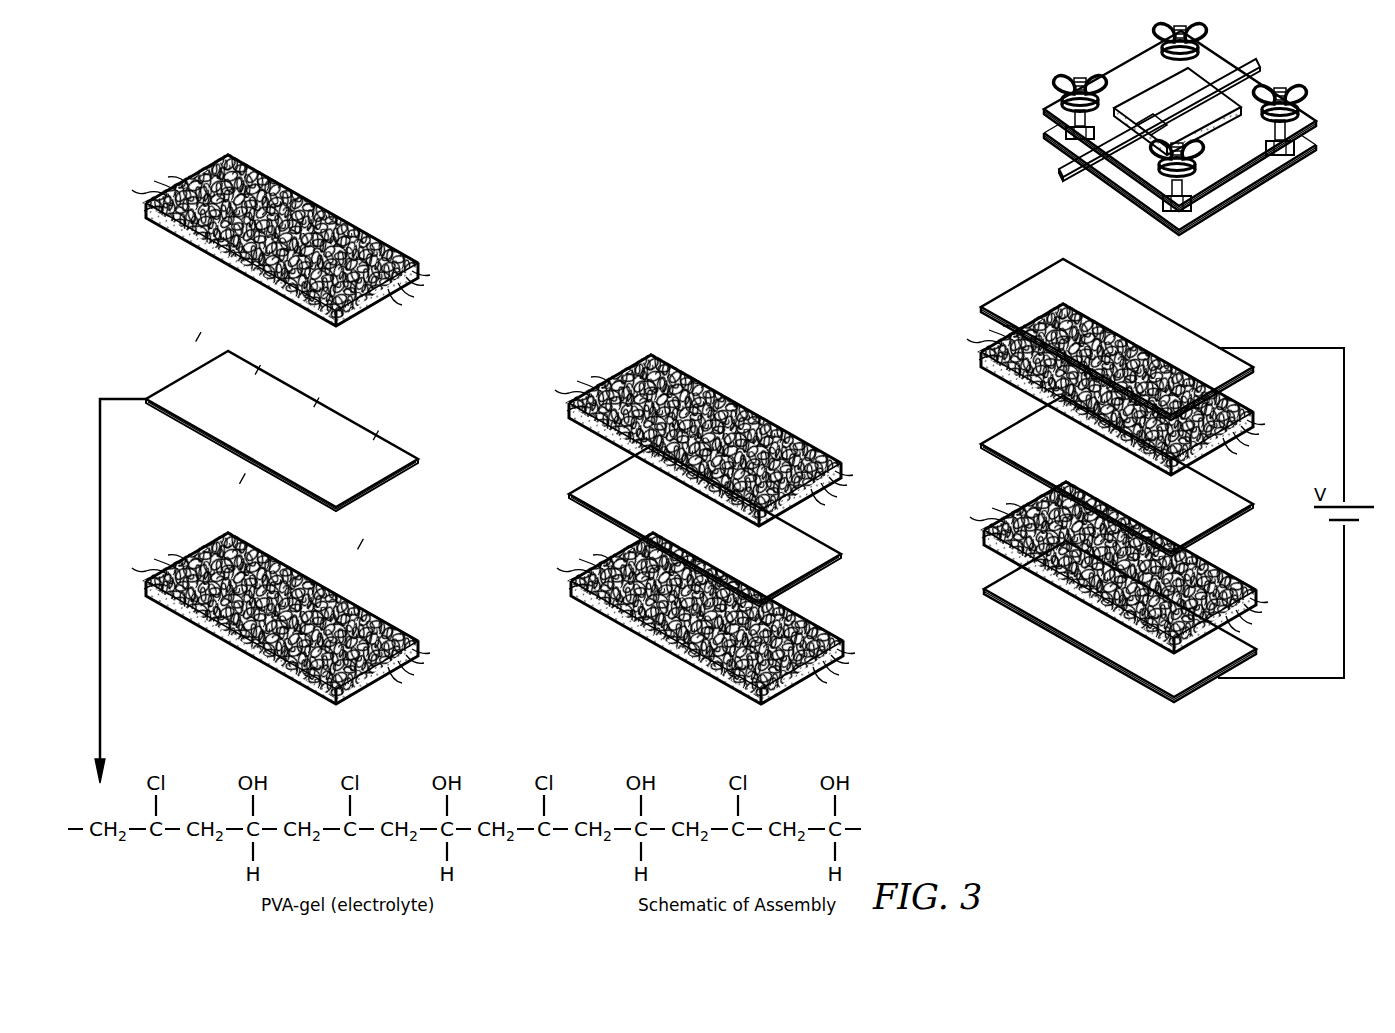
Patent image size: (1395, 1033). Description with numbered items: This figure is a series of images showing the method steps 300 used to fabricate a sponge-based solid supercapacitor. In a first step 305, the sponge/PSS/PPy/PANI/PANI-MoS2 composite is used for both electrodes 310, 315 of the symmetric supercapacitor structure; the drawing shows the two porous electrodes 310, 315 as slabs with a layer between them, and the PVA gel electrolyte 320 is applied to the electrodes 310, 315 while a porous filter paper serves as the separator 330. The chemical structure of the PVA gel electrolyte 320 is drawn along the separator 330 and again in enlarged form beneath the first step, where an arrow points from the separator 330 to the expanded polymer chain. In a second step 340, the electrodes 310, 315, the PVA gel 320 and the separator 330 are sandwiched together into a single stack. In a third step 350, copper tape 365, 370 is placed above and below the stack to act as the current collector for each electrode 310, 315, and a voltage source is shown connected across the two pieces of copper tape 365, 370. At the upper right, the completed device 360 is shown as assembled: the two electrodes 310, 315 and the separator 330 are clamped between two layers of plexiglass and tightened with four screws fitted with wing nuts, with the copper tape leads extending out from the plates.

The method steps 300 is at (174, 69).
The first step 305 is at (228, 709).
The electrode 310 is at (360, 236).
The electrode 315 is at (396, 677).
The PVA gel electrolyte 320 is at (364, 362).
The separator 330 is at (403, 478).
The second step 340 is at (652, 709).
The third step 350 is at (1065, 709).
The completed device 360 is at (1048, 42).
The copper tape 365 is at (1001, 598).
The copper tape 370 is at (1165, 312).